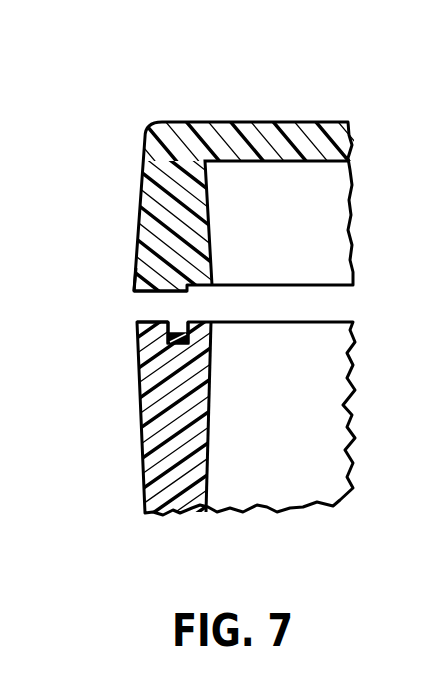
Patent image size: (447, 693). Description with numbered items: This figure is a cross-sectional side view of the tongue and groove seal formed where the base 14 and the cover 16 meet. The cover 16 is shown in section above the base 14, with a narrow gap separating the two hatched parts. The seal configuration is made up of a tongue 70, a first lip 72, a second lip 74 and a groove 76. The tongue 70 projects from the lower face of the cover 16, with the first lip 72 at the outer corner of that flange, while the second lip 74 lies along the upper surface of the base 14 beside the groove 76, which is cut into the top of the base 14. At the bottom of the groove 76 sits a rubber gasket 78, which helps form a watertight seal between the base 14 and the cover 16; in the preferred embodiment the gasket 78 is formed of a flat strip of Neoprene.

The base 14 is at (142, 446).
The cover 16 is at (228, 122).
The tongue 70 is at (165, 293).
The first lip 72 is at (137, 289).
The second lip 74 is at (142, 323).
The groove 76 is at (178, 330).
The rubber gasket 78 is at (168, 339).